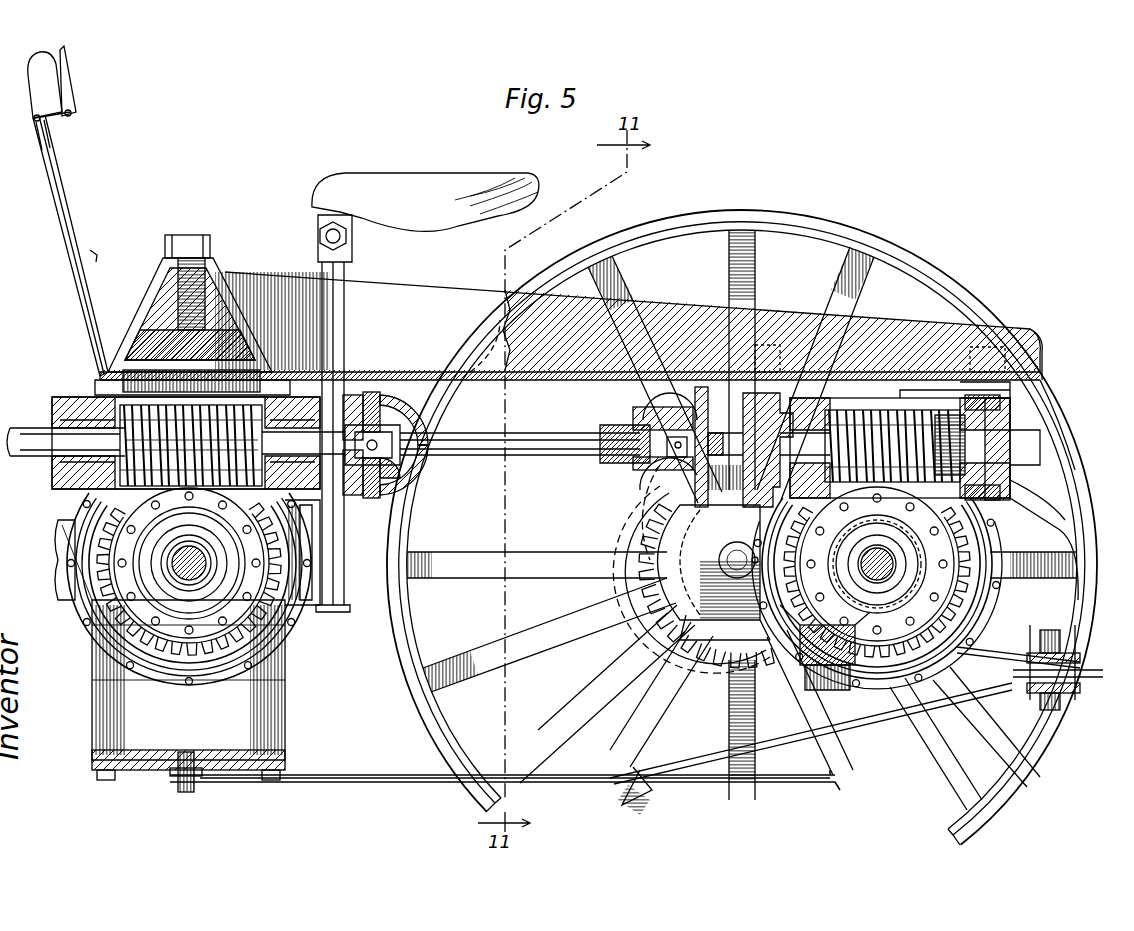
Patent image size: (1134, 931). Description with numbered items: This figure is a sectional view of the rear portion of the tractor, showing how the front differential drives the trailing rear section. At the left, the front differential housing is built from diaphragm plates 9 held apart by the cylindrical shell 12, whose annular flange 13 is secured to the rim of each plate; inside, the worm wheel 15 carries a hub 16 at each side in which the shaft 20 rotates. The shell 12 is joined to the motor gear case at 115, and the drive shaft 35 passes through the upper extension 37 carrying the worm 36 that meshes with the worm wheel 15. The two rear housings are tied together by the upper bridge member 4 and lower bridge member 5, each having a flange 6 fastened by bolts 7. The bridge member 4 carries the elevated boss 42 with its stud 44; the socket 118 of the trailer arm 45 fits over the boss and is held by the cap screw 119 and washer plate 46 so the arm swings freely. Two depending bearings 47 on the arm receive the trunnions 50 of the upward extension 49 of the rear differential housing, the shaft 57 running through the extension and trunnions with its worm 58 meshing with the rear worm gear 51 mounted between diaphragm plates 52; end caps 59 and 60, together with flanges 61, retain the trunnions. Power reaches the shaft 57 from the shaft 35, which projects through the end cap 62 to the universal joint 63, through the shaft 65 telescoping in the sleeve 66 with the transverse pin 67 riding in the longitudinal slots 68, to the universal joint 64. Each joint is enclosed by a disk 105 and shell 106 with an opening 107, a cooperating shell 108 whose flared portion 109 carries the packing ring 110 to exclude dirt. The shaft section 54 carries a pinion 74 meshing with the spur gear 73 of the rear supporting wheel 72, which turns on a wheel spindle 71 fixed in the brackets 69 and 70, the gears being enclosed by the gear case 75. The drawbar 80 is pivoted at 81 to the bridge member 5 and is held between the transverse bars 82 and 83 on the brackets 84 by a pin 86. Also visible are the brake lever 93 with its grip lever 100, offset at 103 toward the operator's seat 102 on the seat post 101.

The bridge member 4 is at (290, 372).
The bridge member 5 is at (150, 760).
The flange 6 is at (100, 386).
The bolt 7 is at (105, 772).
The diaphragm plate 9 is at (100, 600).
The cylindrical shell 12 is at (160, 667).
The annular flange 13 is at (290, 678).
The worm wheel 15 is at (292, 630).
The hub 16 is at (110, 657).
The shaft 20 is at (110, 633).
The drive shaft 35 is at (22, 436).
The worm 36 is at (180, 410).
The upper extension 37 is at (200, 413).
The elevated boss 42 is at (233, 330).
The stud 44 is at (218, 268).
The trailer arm 45 is at (427, 293).
The washer plate 46 is at (164, 255).
The depending bearing 47 is at (793, 357).
The upward extension 49 is at (917, 413).
The trunnion 50 is at (760, 360).
The worm gear 51 is at (1007, 585).
The diaphragm plate 52 is at (840, 643).
The shaft section 54 is at (840, 680).
The shaft 57 is at (955, 372).
The worm 58 is at (870, 413).
The end cap 59 is at (1037, 447).
The end cap 60 is at (723, 420).
The flange 61 is at (835, 375).
The end cap 62 is at (335, 508).
The universal joint 63 is at (383, 417).
The universal joint 64 is at (680, 393).
The shaft 65 is at (463, 433).
The sleeve 66 is at (623, 427).
The transverse pin 67 is at (607, 427).
The longitudinal slot 68 is at (533, 427).
The bracket 69 is at (680, 643).
The bracket 70 is at (620, 583).
The wheel spindle 71 is at (717, 667).
The rear supporting wheel 72 is at (1077, 497).
The spur gear 73 is at (997, 533).
The pinion 74 is at (1000, 607).
The gear case 75 is at (622, 637).
The drawbar 80 is at (408, 783).
The pivot 81 is at (192, 767).
The transverse bar 82 is at (1080, 690).
The transverse bar 83 is at (1097, 640).
The bracket 84 is at (1003, 647).
The pin 86 is at (1078, 668).
The lever 93 is at (80, 212).
The grip lever 100 is at (72, 72).
The seat post 101 is at (347, 268).
The operator's seat 102 is at (487, 183).
The offset 103 is at (90, 255).
The disk 105 is at (407, 510).
The shell 106 is at (400, 407).
The opening 107 is at (433, 403).
The cooperating shell 108 is at (423, 468).
The flared portion 109 is at (410, 490).
The packing ring 110 is at (410, 415).
The gear case connection 115 is at (60, 540).
The socket 118 is at (155, 292).
The cap screw 119 is at (192, 240).